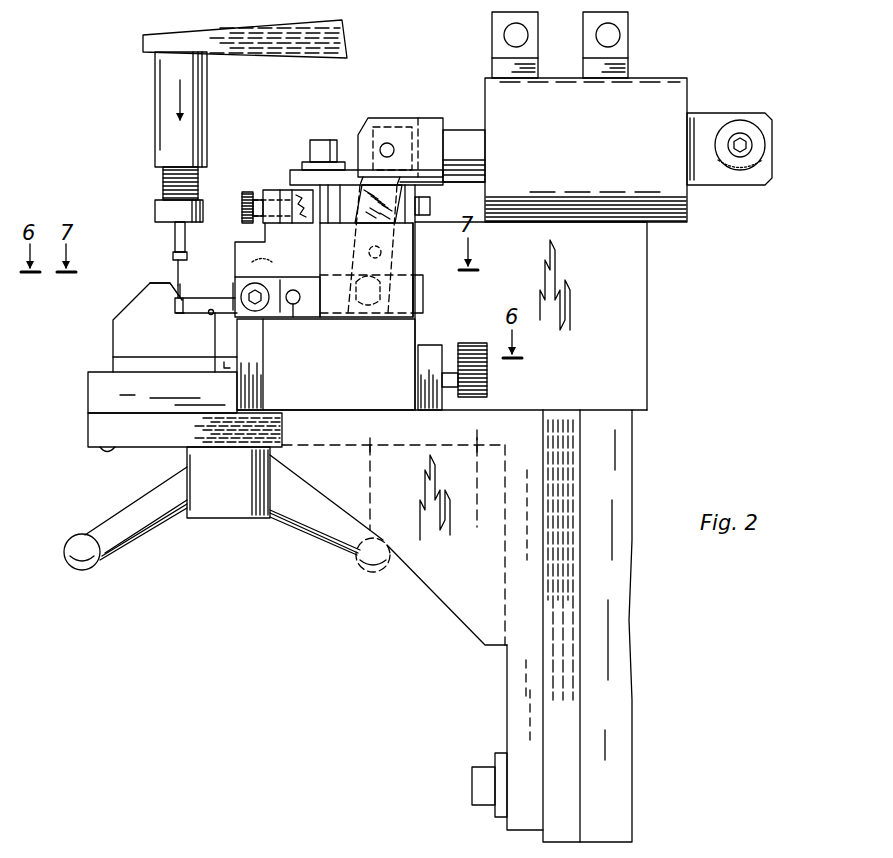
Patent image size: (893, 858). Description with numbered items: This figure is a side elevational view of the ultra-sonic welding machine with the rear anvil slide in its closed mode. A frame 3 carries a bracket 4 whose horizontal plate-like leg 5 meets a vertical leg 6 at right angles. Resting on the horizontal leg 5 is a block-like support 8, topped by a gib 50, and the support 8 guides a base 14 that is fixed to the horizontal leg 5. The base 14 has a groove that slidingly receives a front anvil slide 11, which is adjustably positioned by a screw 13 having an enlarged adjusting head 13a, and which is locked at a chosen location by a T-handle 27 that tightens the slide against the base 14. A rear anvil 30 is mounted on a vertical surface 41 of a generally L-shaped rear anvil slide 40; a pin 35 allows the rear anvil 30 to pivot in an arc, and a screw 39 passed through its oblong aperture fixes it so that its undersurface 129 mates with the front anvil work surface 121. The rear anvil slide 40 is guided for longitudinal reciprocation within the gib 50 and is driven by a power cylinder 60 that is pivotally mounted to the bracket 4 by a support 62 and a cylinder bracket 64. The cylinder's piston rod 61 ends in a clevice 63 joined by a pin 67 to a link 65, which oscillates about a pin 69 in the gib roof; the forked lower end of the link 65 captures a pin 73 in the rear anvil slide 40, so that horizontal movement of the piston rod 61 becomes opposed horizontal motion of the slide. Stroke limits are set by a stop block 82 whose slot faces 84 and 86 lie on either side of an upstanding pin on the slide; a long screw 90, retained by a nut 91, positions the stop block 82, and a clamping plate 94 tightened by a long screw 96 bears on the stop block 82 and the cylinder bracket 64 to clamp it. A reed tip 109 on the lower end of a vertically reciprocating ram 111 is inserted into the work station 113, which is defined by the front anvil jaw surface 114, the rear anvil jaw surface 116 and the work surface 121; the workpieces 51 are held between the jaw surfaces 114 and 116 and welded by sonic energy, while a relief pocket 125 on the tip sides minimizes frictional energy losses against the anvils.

The frame 3 is at (640, 718).
The bracket 4 is at (460, 630).
The horizontal plate-like leg 5 is at (160, 434).
The vertical leg 6 is at (525, 686).
The block-like support 8 is at (318, 389).
The front anvil slide 11 is at (112, 354).
The screw 13 is at (450, 356).
The enlarged adjusting head 13a is at (488, 382).
The base 14 is at (103, 392).
The T-handle 27 is at (170, 495).
The rear anvil 30 is at (185, 262).
The pin 35 is at (294, 308).
The screw 39 is at (256, 296).
The rear anvil slide 40 is at (424, 306).
The vertical surface 41 is at (312, 290).
The gib 50 is at (422, 268).
The workpieces 51 is at (180, 295).
The power cylinder 60 is at (670, 84).
The piston rod 61 is at (470, 150).
The support 62 is at (758, 142).
The clevice 63 is at (422, 120).
The cylinder bracket 64 is at (632, 270).
The link 65 is at (432, 204).
The pin 67 is at (388, 143).
The pin 69 is at (382, 252).
The pin 73 is at (370, 302).
The stop block 82 is at (284, 198).
The face 84 is at (340, 185).
The face 86 is at (338, 226).
The long screw 90 is at (247, 192).
The nut 91 is at (412, 228).
The clamping plate 94 is at (296, 170).
The long screw 96 is at (326, 140).
The reed tip 109 is at (165, 233).
The ram 111 is at (156, 86).
The work station 113 is at (183, 298).
The front anvil jaw surface 114 is at (178, 294).
The rear anvil jaw surface 116 is at (184, 306).
The front anvil work surface 121 is at (210, 316).
The relief pocket 125 is at (178, 242).
The undersurface 129 is at (182, 316).